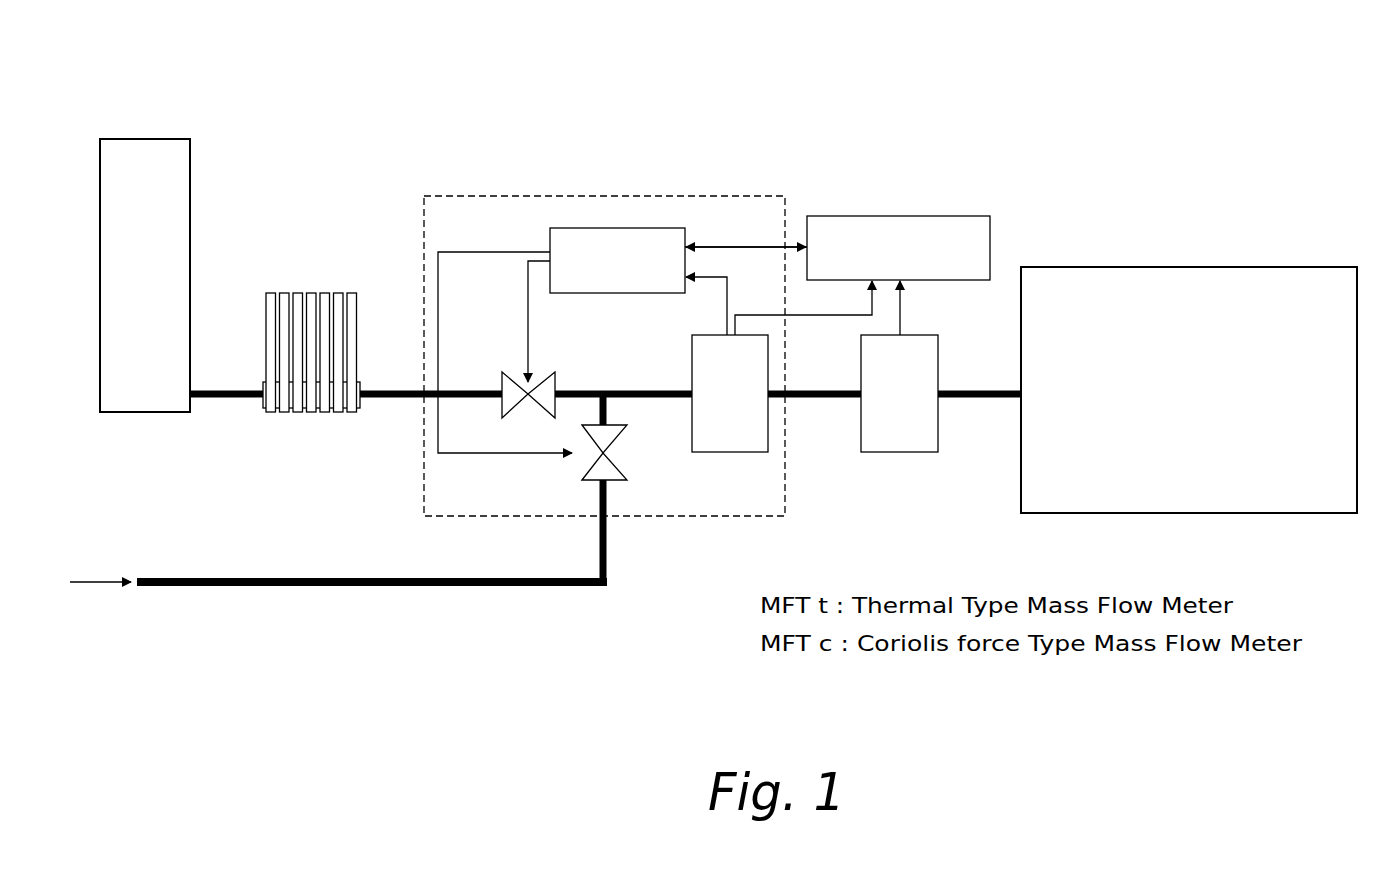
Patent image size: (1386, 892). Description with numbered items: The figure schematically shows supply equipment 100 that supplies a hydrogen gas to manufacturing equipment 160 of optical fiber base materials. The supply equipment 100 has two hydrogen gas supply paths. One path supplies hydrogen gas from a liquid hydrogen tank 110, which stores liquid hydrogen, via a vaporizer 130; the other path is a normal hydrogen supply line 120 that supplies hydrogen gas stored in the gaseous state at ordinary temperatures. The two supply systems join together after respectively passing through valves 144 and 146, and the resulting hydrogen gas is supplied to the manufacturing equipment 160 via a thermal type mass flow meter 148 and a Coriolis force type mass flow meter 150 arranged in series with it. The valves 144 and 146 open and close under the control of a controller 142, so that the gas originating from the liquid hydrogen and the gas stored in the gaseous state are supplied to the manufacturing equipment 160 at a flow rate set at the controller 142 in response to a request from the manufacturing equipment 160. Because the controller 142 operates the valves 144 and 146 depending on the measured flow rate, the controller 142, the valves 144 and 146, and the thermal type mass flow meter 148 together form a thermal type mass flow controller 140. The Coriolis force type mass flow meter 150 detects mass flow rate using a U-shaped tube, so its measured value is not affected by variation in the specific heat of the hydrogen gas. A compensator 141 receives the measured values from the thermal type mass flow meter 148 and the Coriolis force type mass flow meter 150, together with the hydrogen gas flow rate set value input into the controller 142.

The supply equipment 100 is at (117, 98).
The liquid hydrogen tank 110 is at (145, 413).
The normal hydrogen supply line 120 is at (326, 588).
The vaporizer 130 is at (314, 413).
The thermal type mass flow controller 140 is at (424, 200).
The compensator 141 is at (990, 250).
The controller 142 is at (550, 236).
The valve 144 is at (513, 385).
The valve 146 is at (582, 475).
The thermal type mass flow meter 148 is at (692, 345).
The Coriolis force type mass flow meter 150 is at (900, 454).
The manufacturing equipment 160 is at (1168, 267).